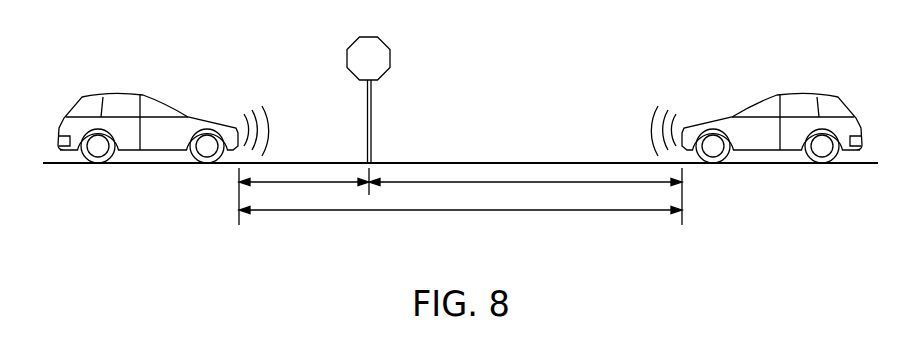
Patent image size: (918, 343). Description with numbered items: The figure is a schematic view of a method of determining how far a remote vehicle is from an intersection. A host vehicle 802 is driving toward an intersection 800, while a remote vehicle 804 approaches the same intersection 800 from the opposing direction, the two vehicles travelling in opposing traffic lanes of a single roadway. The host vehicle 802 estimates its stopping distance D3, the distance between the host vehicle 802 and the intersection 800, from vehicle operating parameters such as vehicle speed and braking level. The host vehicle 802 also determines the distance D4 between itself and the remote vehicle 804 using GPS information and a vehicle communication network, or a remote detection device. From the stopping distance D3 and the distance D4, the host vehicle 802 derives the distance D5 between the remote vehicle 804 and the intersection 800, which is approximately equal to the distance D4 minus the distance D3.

The intersection 800 is at (377, 62).
The host vehicle 802 is at (768, 105).
The remote vehicle 804 is at (153, 105).
The stopping distance D3 is at (465, 180).
The distance between host vehicle and remote vehicle D4 is at (575, 210).
The distance between remote vehicle and intersection D5 is at (290, 183).